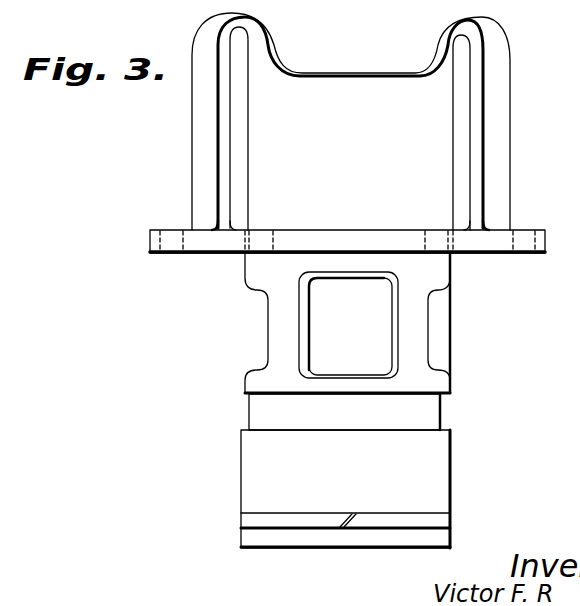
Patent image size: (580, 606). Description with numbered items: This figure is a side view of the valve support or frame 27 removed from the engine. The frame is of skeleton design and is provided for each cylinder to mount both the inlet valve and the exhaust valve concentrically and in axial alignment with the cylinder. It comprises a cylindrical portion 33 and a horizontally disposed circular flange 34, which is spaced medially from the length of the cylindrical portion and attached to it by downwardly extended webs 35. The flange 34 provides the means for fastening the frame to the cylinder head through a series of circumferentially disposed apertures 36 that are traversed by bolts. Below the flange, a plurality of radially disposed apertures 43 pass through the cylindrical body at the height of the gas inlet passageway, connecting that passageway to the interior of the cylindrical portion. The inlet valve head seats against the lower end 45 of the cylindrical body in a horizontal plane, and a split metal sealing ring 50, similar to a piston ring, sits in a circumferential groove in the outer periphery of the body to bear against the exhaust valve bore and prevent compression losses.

The valve support or frame 27 is at (507, 117).
The cylindrical portion 33 is at (350, 153).
The circular flange 34 is at (358, 231).
The webs 35 is at (202, 171).
The apertures 36 is at (275, 231).
The radially disposed apertures 43 is at (268, 330).
The lower end 45 is at (250, 548).
The metal sealing ring 50 is at (241, 517).